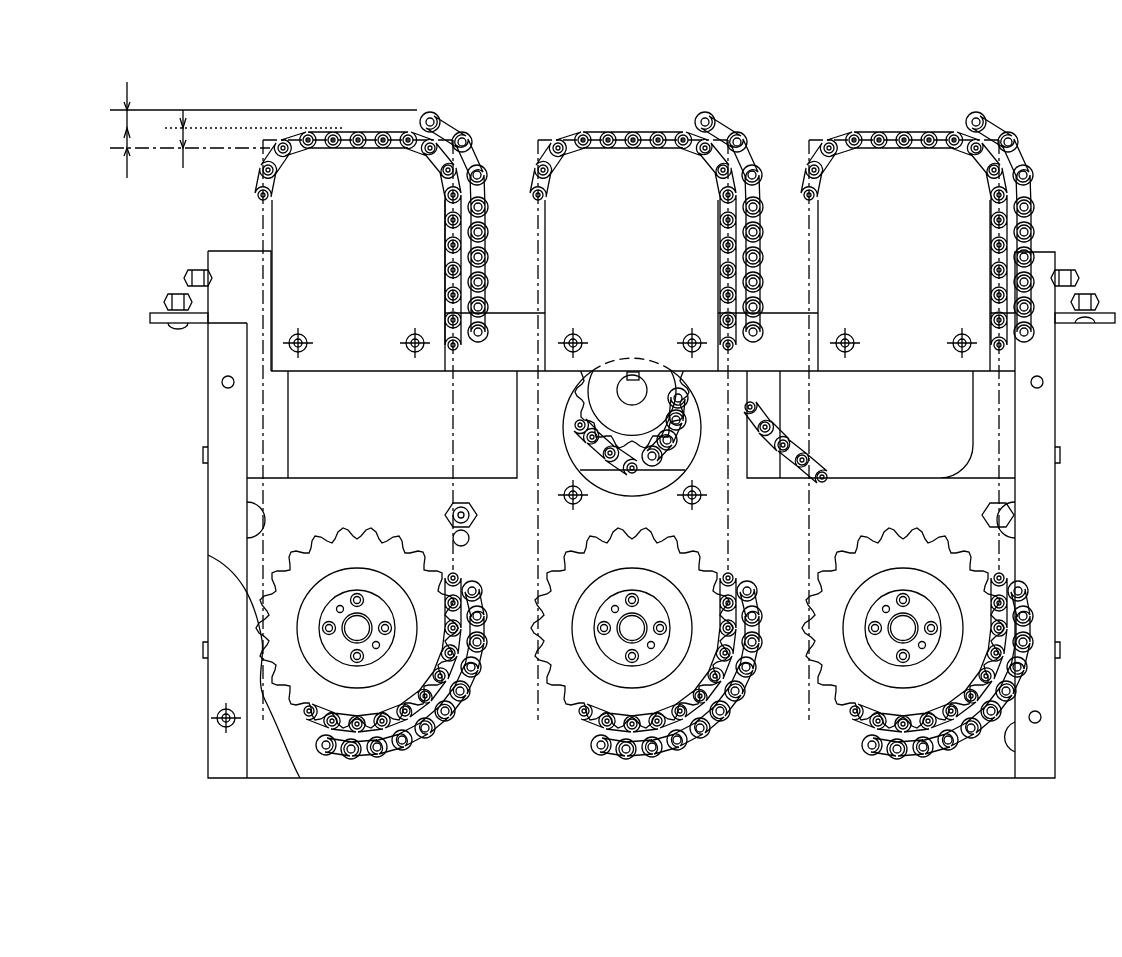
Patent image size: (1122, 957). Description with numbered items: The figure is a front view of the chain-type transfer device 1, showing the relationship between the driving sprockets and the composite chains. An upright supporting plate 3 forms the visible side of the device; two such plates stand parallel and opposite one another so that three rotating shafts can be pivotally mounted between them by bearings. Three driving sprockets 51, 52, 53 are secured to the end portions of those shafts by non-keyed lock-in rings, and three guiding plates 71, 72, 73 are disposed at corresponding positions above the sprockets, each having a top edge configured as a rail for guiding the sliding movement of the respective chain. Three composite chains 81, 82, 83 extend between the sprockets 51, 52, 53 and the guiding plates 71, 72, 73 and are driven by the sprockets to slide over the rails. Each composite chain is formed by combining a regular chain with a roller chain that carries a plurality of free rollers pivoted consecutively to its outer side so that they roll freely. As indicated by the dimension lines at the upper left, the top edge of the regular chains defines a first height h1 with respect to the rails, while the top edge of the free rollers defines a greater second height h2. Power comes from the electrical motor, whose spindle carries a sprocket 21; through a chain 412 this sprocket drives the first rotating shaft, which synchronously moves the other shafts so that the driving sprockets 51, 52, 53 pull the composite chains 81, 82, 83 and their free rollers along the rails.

The chain-type transfer device 1 is at (818, 68).
The upright supporting plate 3 is at (958, 765).
The sprocket 21 is at (609, 388).
The chain 412 is at (818, 456).
The driving sprocket 51 is at (825, 660).
The driving sprocket 52 is at (560, 678).
The driving sprocket 53 is at (272, 636).
The guiding plate 71 is at (846, 178).
The guiding plate 72 is at (570, 165).
The guiding plate 73 is at (272, 240).
The composite chain 81 is at (943, 130).
The composite chain 82 is at (637, 134).
The composite chain 83 is at (370, 134).
The first height h1 is at (190, 170).
The second height h2 is at (263, 130).